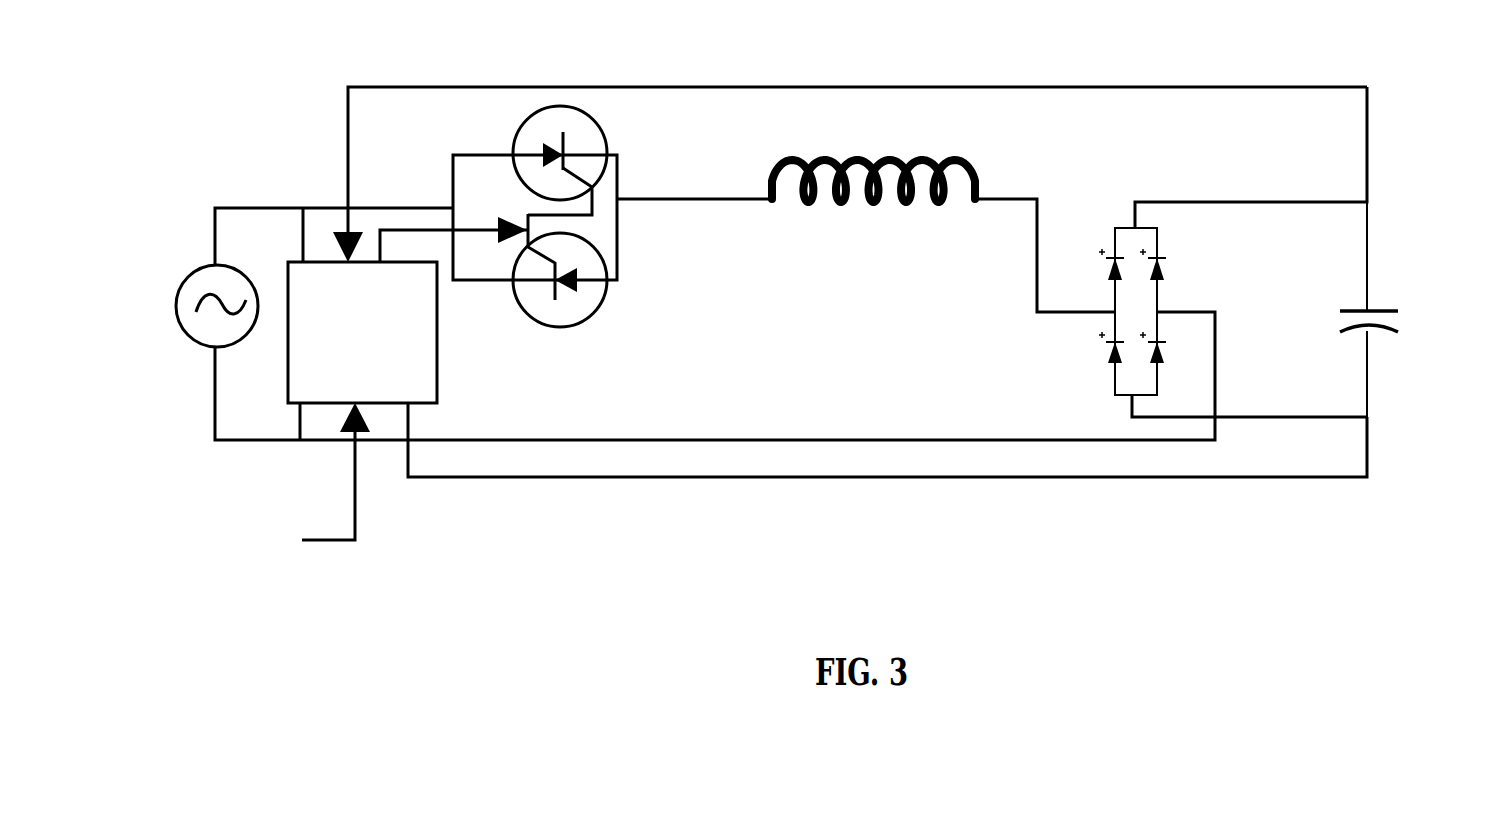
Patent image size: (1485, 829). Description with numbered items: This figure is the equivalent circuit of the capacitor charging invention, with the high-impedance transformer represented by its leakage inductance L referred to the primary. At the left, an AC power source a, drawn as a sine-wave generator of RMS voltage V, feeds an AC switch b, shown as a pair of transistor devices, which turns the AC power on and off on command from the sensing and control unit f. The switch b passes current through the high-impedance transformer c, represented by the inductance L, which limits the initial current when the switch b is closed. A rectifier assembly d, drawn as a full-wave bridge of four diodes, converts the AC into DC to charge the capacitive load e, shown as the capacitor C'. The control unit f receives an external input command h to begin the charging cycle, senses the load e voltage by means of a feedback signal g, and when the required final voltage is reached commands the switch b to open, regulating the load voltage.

The AC power source a is at (188, 332).
The AC switch b is at (568, 210).
The high-impedance transformer c is at (873, 198).
The rectifier assembly d is at (1132, 261).
The capacitive load e is at (1410, 320).
The sensing and control unit f is at (369, 323).
The feedback signal g is at (850, 143).
The input command h is at (341, 490).